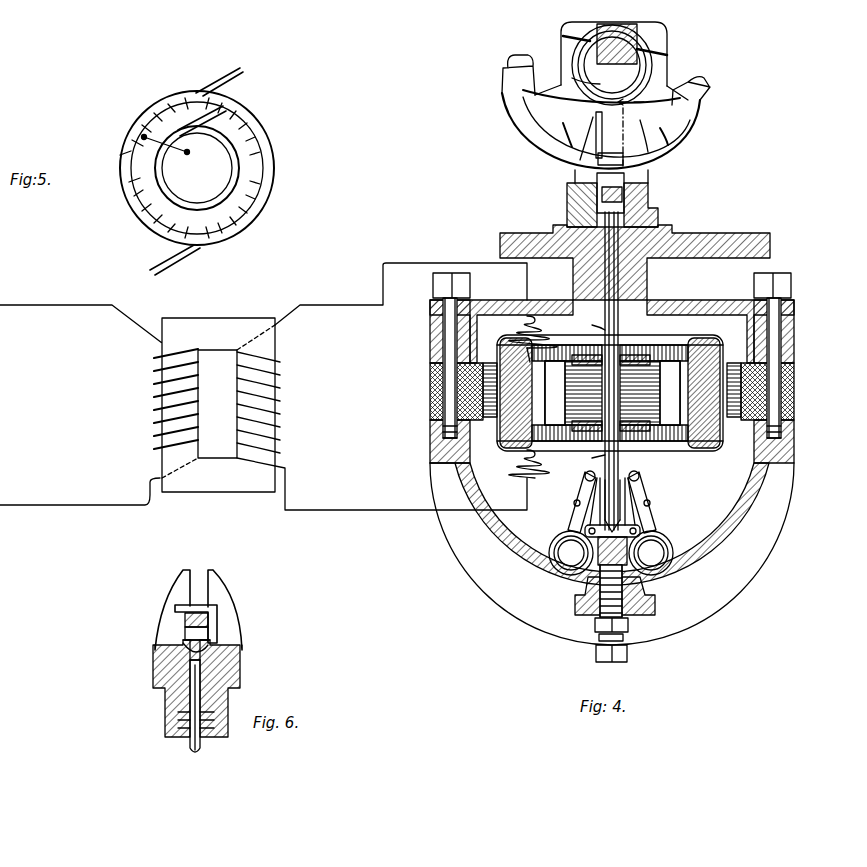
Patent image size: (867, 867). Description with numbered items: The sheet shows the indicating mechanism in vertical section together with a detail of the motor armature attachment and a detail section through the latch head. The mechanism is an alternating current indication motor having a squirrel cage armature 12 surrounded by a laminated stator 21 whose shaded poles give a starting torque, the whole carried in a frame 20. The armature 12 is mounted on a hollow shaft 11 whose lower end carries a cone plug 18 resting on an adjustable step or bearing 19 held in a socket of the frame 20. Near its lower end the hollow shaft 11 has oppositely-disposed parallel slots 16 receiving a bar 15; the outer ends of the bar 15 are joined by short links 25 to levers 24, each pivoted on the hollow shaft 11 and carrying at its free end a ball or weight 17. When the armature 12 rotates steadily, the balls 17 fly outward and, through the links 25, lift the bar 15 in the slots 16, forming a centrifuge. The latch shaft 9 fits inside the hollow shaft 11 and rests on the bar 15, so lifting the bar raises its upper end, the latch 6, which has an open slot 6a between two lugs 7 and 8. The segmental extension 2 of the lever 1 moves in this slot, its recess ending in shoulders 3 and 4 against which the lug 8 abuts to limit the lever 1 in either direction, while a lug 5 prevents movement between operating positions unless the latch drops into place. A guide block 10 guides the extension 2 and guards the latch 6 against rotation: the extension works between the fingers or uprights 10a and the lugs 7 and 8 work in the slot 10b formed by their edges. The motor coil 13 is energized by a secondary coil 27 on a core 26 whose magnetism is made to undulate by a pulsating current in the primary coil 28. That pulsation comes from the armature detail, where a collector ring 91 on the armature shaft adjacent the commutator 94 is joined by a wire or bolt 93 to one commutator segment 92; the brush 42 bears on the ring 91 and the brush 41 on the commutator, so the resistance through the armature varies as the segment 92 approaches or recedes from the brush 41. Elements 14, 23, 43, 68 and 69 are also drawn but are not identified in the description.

In FIG. 4, the lever 1 is at (665, 45).
In FIG. 4, the segmental extension 2 is at (705, 130).
In FIG. 4, the shoulder 3 is at (575, 130).
In FIG. 4, the shoulder 4 is at (623, 158).
In FIG. 4, the lug 5 is at (598, 178).
In FIG. 6, the lug 5 is at (185, 630).
In FIG. 4, the latch 6 is at (658, 208).
In FIG. 6, the latch 6 is at (200, 660).
In FIG. 4, the open slot 6a is at (567, 203).
In FIG. 4, the lug 7 is at (625, 183).
In FIG. 6, the lug 7 is at (180, 642).
In FIG. 4, the lug 8 is at (604, 148).
In FIG. 6, the lug 8 is at (200, 605).
In FIG. 4, the shaft 9 is at (640, 455).
In FIG. 6, the shaft 9 is at (194, 688).
In FIG. 4, the guide block 10 is at (650, 175).
In FIG. 4, the fingers or uprights 10a is at (662, 128).
In FIG. 6, the fingers or uprights 10a is at (226, 580).
In FIG. 4, the slot 10b is at (580, 74).
In FIG. 4, the hollow shaft 11 is at (596, 458).
In FIG. 4, the squirrel cage armature 12 is at (672, 330).
In FIG. 4, the coil 13 is at (520, 344).
In FIG. 4, the pivot 14 is at (640, 474).
In FIG. 4, the bar 15 is at (640, 528).
In FIG. 4, the slots 16 is at (596, 514).
In FIG. 4, the balls or weights 17 is at (660, 560).
In FIG. 4, the cone plug 18 is at (622, 560).
In FIG. 4, the step or bearing 19 is at (634, 612).
In FIG. 4, the frame 20 is at (612, 459).
In FIG. 4, the stator 21 is at (794, 390).
In FIG. 4, the flange 23 is at (778, 240).
In FIG. 4, the levers 24 is at (660, 490).
In FIG. 4, the short links 25 is at (660, 510).
In FIG. 4, the core 26 is at (228, 496).
In FIG. 4, the secondary coil 27 is at (272, 402).
In FIG. 4, the primary coil 28 is at (160, 410).
In FIG. 5, the brush 41 is at (176, 260).
In FIG. 5, the brush 42 is at (226, 108).
In FIG. 5, the lead 43 is at (219, 74).
In FIG. 4, the conductor 68 is at (399, 265).
In FIG. 4, the conductor 69 is at (380, 507).
In FIG. 5, the collector ring 91 is at (228, 177).
In FIG. 5, the commutator segment 92 is at (140, 139).
In FIG. 5, the wire or bolt 93 is at (166, 138).
In FIG. 5, the commutator 94 is at (207, 168).